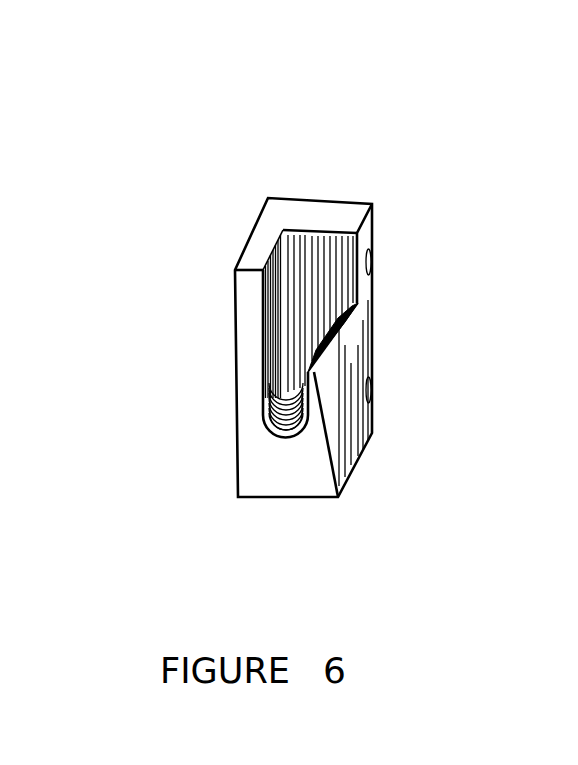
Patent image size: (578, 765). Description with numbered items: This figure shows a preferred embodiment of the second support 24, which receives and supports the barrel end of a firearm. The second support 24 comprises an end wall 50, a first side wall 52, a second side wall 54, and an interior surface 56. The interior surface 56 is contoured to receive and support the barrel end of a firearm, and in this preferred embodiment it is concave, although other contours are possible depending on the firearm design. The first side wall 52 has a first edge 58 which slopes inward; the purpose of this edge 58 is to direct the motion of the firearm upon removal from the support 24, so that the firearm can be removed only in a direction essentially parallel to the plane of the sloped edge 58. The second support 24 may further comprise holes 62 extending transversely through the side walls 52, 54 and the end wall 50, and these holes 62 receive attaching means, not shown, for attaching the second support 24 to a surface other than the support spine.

The second support 24 is at (243, 131).
The end wall 50 is at (300, 213).
The first side wall 52 is at (368, 230).
The second side wall 54 is at (257, 252).
The interior surface 56 is at (283, 390).
The first edge 58 is at (345, 428).
The holes 62 is at (372, 268).